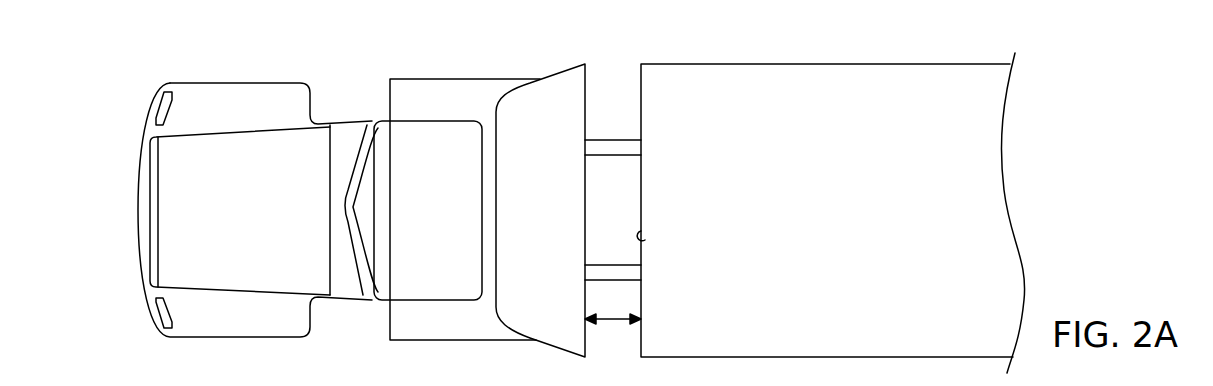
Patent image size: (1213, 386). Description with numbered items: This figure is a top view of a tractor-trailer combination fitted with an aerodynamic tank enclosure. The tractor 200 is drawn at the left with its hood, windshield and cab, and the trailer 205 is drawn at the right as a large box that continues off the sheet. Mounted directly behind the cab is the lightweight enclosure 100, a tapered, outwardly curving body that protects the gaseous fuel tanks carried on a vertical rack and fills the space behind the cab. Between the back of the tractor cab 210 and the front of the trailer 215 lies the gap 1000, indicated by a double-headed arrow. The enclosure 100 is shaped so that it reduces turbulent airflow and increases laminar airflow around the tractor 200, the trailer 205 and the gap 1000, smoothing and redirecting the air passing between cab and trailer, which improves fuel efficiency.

The tractor 200 is at (361, 201).
The trailer 205 is at (817, 62).
The lightweight enclosure 100 is at (562, 250).
The back of the tractor cab 210 is at (483, 290).
The front of the trailer 215 is at (645, 240).
The gap 1000 is at (610, 321).